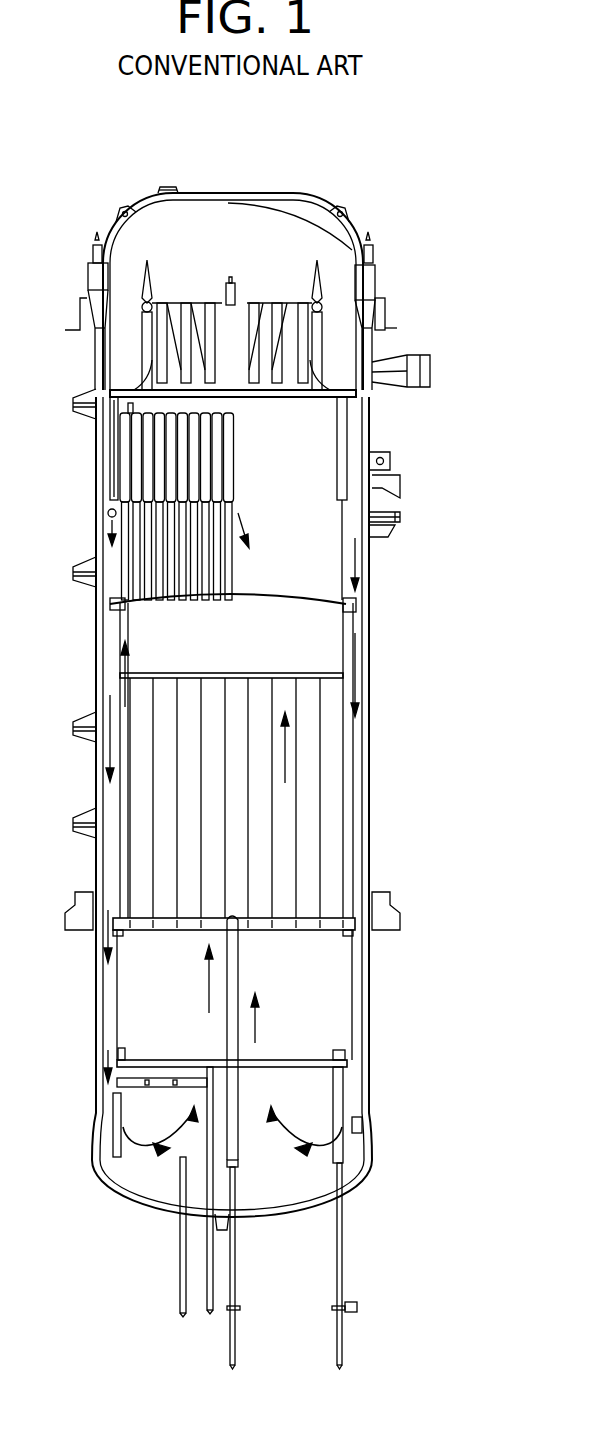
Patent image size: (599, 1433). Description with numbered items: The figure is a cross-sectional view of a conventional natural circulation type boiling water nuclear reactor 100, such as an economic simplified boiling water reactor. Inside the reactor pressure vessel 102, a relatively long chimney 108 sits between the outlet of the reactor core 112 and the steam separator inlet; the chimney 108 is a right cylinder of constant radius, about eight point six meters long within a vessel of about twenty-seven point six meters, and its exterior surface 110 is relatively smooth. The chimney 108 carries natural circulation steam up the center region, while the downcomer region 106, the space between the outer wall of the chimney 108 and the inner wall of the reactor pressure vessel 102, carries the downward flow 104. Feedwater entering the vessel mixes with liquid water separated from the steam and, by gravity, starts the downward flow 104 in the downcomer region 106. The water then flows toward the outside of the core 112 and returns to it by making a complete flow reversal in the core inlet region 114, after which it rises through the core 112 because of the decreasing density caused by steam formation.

The natural circulation type boiling water nuclear reactor 100 is at (279, 163).
The reactor pressure vessel 102 is at (367, 603).
The downward flow 104 is at (355, 672).
The downcomer region 106 is at (355, 777).
The chimney 108 is at (318, 856).
The exterior surface of the chimney 110 is at (345, 877).
The reactor core 112 is at (323, 1002).
The core inlet region 114 is at (305, 1103).